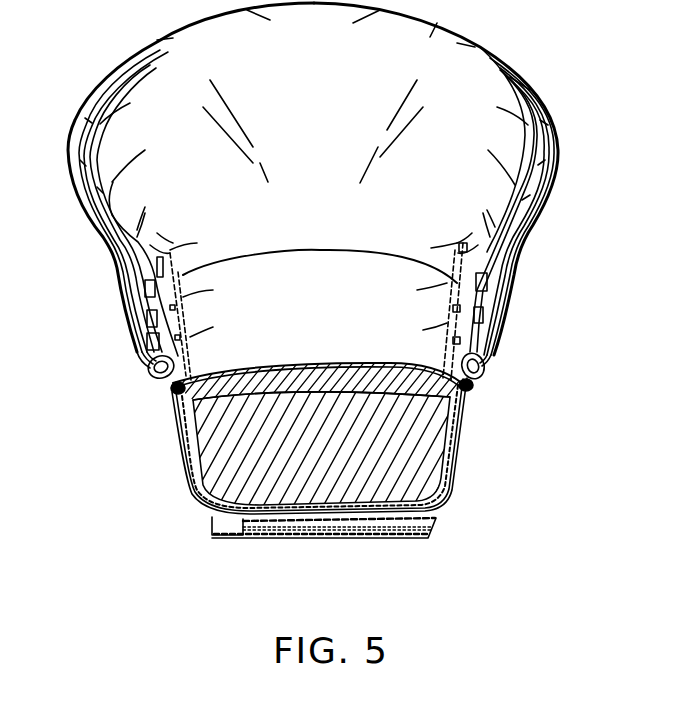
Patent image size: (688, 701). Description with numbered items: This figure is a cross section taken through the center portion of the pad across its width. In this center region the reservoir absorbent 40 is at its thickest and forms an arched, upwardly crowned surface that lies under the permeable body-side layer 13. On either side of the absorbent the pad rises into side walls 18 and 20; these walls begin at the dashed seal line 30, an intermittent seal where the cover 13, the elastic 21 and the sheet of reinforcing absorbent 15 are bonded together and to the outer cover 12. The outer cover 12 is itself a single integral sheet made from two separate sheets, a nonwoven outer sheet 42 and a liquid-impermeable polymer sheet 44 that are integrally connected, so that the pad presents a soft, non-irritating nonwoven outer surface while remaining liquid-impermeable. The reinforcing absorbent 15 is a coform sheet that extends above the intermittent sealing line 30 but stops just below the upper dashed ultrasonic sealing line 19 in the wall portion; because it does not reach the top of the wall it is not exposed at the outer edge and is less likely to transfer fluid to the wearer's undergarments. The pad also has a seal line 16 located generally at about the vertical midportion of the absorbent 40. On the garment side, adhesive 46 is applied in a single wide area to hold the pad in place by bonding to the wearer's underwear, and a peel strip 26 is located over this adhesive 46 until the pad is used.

The permeable body-side layer 13 is at (433, 27).
The seal line 16 is at (533, 128).
The elastic 21 is at (135, 312).
The upper sealing line 19 is at (482, 313).
The wall 18 is at (150, 382).
The wall 20 is at (490, 383).
The sheet of reinforcing absorbent 15 is at (333, 363).
The dashed seal line 30 is at (467, 392).
The reservoir absorbent 40 is at (427, 457).
The outer cover 12 is at (437, 505).
The liquid-impermeable polymer sheet 44 is at (190, 468).
The nonwoven outer sheet 42 is at (200, 503).
The adhesive 46 is at (260, 536).
The peel strip 26 is at (384, 539).